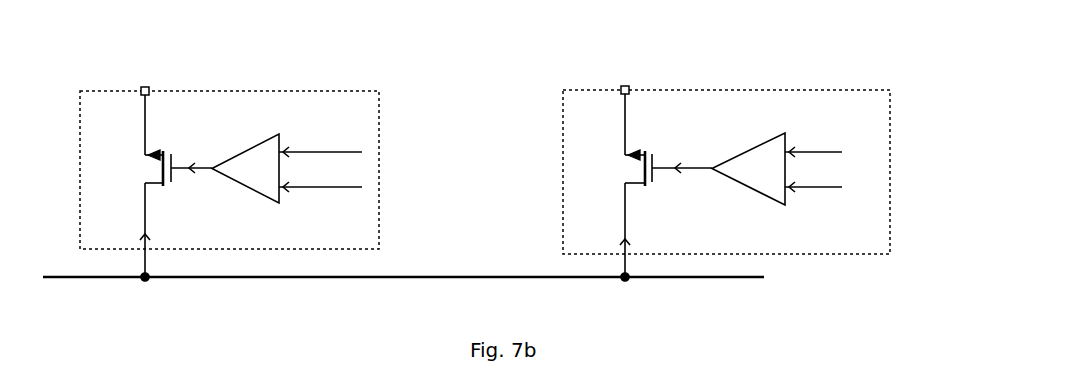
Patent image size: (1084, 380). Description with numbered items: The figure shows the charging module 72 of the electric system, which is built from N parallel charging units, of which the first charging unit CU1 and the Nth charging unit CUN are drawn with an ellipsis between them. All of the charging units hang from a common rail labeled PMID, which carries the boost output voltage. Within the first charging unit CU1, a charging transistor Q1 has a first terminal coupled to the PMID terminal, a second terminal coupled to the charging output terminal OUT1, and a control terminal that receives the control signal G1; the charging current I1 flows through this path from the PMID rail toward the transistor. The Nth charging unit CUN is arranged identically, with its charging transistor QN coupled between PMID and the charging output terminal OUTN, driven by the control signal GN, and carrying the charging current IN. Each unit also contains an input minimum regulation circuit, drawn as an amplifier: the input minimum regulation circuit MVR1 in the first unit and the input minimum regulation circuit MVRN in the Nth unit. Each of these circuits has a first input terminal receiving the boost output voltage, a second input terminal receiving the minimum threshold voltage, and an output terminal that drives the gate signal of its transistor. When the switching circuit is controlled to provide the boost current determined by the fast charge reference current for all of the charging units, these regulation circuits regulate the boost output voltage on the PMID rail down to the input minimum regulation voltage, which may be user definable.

The charging module 72 is at (959, 34).
The PMID terminal PMID is at (364, 281).
The charging unit CU1 is at (386, 180).
The charging unit CUN is at (898, 180).
The charging transistor Q1 is at (142, 140).
The charging transistor QN is at (621, 140).
The control signal G1 is at (191, 158).
The control signal GN is at (682, 157).
The charging current I1 is at (133, 232).
The charging current IN is at (614, 232).
The input minimum regulation circuit MVR1 is at (287, 168).
The input minimum regulation circuit MVRN is at (777, 169).
The charging output terminal OUT1 is at (143, 78).
The charging output terminal OUTN is at (619, 77).